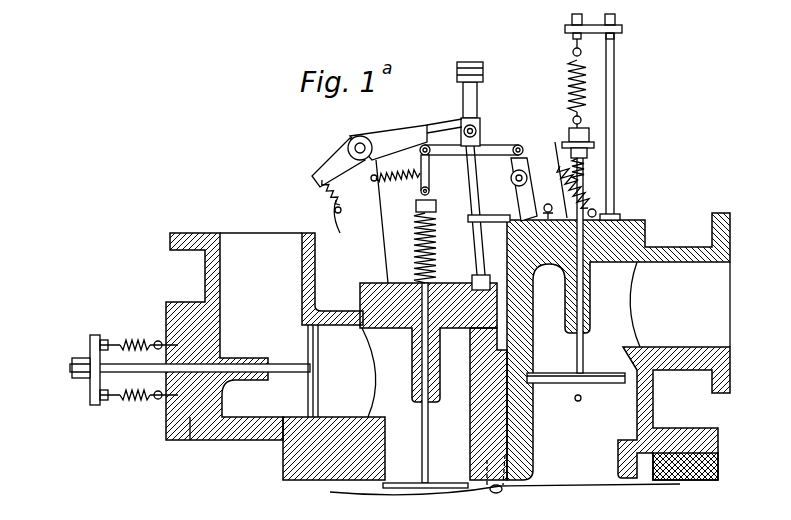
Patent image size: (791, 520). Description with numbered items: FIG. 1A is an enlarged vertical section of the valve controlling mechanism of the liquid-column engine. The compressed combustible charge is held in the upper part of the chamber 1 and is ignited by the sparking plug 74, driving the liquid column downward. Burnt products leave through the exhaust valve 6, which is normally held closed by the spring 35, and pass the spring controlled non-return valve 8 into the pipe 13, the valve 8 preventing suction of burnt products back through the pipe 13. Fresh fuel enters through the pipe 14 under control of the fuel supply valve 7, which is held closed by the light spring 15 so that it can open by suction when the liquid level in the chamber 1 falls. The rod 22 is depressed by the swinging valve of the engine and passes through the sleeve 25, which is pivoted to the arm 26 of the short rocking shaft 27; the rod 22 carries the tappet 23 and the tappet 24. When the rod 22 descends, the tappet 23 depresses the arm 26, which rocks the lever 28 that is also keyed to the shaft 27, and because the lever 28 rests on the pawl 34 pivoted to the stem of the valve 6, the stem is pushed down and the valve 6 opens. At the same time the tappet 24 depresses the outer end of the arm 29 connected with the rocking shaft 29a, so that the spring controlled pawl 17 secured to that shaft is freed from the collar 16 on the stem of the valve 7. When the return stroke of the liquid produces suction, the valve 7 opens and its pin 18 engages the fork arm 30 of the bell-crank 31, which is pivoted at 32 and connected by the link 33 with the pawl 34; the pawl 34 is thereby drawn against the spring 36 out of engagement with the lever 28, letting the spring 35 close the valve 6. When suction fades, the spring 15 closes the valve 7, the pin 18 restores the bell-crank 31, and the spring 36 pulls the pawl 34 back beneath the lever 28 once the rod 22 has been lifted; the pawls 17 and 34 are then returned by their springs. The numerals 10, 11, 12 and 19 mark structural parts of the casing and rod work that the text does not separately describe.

The chamber 1 is at (362, 482).
The exhaust valve 6 is at (425, 385).
The fuel supply valve 7 is at (576, 366).
The non-return valve 8 is at (191, 371).
The mounting flange 10 is at (292, 444).
The mixing chamber 11 is at (372, 326).
The valve casing 12 is at (630, 227).
The pipe 13 is at (240, 333).
The pipe 14 is at (663, 304).
The spring 15 is at (570, 80).
The collar 16 is at (592, 144).
The pawl 17 is at (596, 196).
The pin 18 is at (586, 165).
The guide rod 19 is at (614, 78).
The rod 22 is at (492, 490).
The tappet 23 is at (480, 74).
The tappet 24 is at (473, 155).
The sleeve 25 is at (479, 124).
The arm 26 is at (448, 130).
The rocking shaft 27 is at (350, 142).
The lever 28 is at (404, 137).
The arm 29 is at (490, 214).
The rocking shaft 29a is at (512, 225).
The fork arm 30 is at (556, 150).
The bell-crank 31 is at (532, 178).
The pivot 32 is at (516, 180).
The link 33 is at (505, 146).
The pawl 34 is at (420, 161).
The spring 35 is at (437, 228).
The spring 36 is at (402, 180).
The sparking plug 74 is at (576, 401).